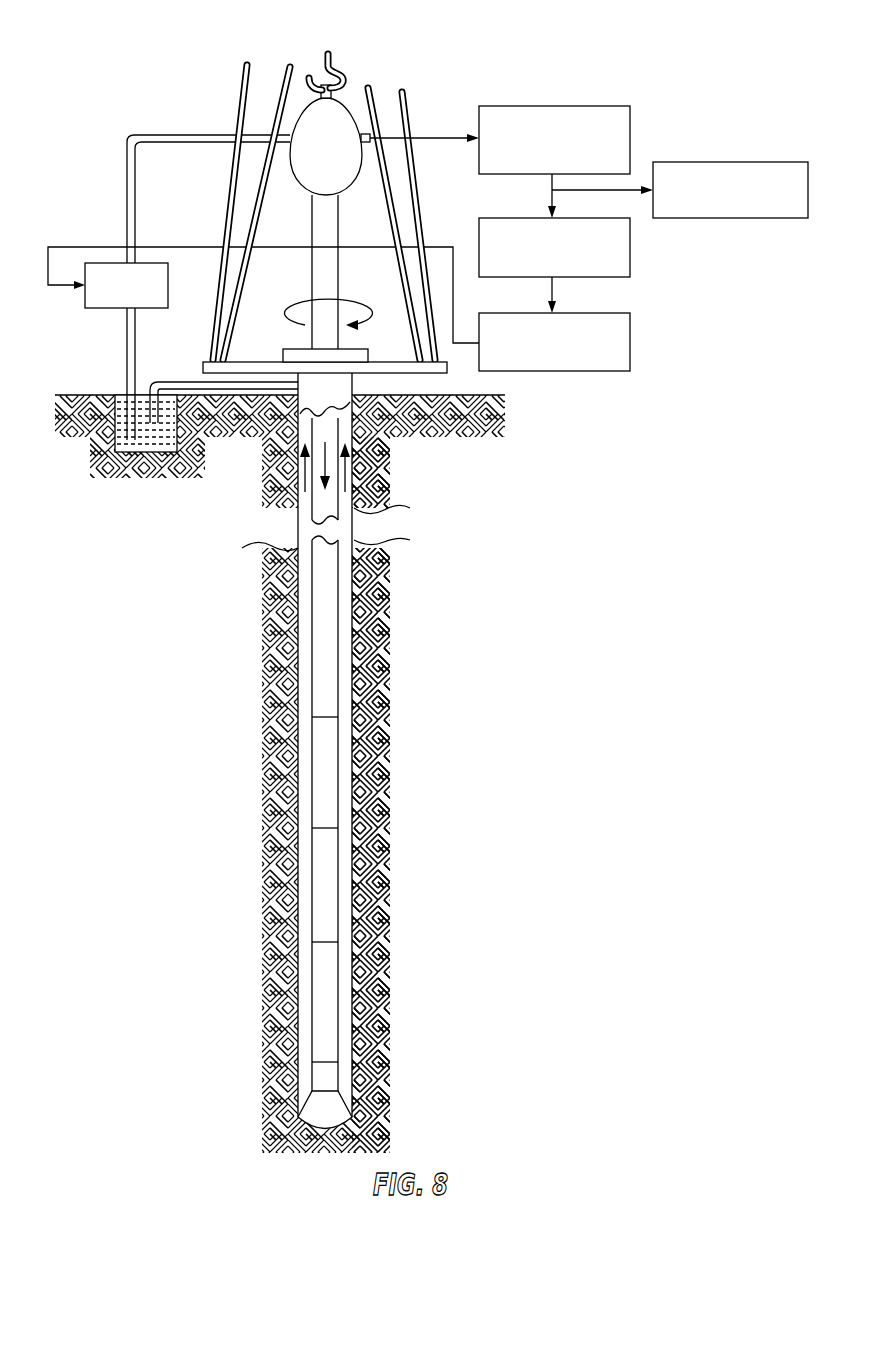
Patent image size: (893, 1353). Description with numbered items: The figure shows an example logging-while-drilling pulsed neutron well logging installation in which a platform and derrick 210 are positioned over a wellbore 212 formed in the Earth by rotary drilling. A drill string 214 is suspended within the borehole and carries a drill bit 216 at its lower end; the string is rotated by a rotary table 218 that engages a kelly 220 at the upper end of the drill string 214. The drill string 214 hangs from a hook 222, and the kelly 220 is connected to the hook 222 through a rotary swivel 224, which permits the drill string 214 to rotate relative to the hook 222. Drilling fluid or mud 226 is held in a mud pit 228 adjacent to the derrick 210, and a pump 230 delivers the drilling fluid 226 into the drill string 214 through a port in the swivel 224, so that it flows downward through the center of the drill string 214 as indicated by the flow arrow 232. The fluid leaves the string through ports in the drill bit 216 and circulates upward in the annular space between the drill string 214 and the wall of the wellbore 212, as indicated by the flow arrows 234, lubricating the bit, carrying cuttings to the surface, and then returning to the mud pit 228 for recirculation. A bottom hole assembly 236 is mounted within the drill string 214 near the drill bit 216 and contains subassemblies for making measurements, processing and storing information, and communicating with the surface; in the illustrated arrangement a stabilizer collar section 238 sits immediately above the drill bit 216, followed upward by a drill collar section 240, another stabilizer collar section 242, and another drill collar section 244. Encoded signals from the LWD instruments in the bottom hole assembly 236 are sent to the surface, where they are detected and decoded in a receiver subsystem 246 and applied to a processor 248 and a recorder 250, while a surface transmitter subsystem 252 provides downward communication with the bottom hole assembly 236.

The platform and derrick 210 is at (468, 378).
The wellbore 212 is at (346, 507).
The drill string 214 is at (314, 600).
The drill bit 216 is at (322, 1105).
The rotary table 218 is at (355, 352).
The kelly 220 is at (325, 212).
The hook 222 is at (343, 62).
The rotary swivel 224 is at (312, 165).
The drilling fluid or mud 226 is at (150, 455).
The mud pit 228 is at (115, 440).
The pump 230 is at (108, 308).
The flow arrow 232 is at (325, 467).
The flow arrows 234 is at (347, 485).
The bottom hole assembly 236 is at (404, 1059).
The stabilizer collar section 238 is at (322, 1000).
The drill collar section 240 is at (322, 882).
The stabilizer collar section 242 is at (322, 772).
The drill collar section 244 is at (312, 675).
The receiver subsystem 246 is at (576, 106).
The processor 248 is at (630, 250).
The recorder 250 is at (735, 162).
The surface transmitter subsystem 252 is at (630, 343).